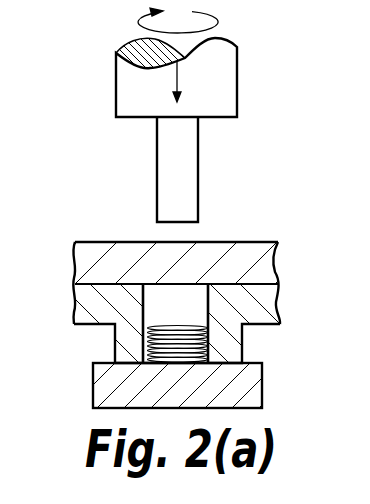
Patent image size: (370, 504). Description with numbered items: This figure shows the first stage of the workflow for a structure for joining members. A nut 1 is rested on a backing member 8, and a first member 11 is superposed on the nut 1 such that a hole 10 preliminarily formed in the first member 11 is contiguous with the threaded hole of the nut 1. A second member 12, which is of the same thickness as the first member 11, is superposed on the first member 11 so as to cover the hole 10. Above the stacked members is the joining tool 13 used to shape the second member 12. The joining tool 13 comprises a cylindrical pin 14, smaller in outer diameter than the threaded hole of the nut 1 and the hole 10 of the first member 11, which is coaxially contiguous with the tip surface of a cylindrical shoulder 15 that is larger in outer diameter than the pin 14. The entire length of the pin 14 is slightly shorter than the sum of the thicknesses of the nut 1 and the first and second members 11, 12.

The nut 1 is at (243, 337).
The backing member 8 is at (93, 391).
The hole 10 is at (145, 310).
The first member 11 is at (86, 325).
The second member 12 is at (277, 262).
The joining tool 13 is at (113, 86).
The cylindrical pin 14 is at (196, 170).
The cylindrical shoulder 15 is at (236, 66).